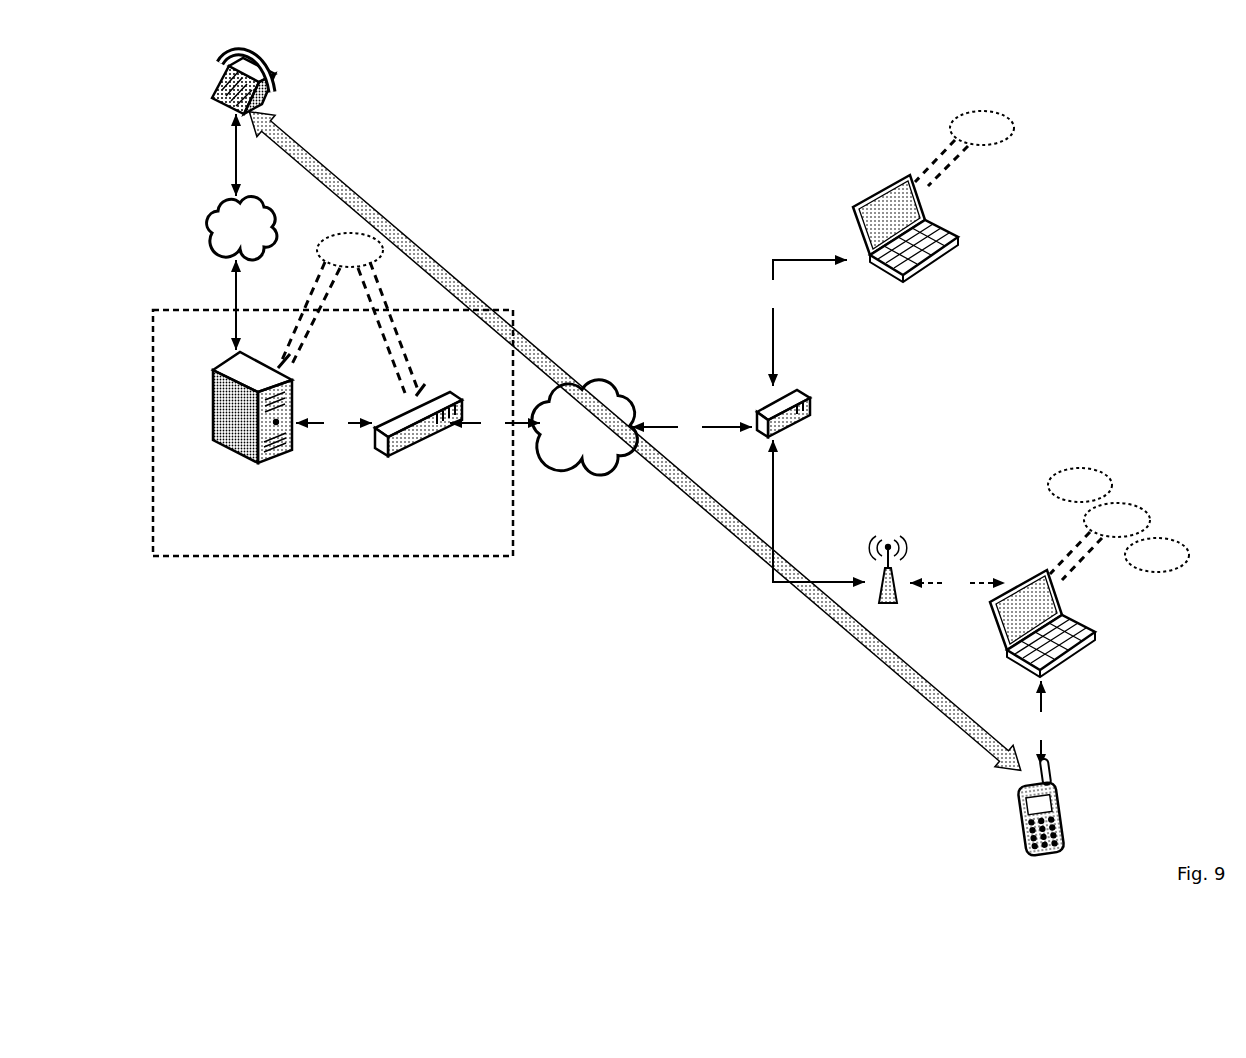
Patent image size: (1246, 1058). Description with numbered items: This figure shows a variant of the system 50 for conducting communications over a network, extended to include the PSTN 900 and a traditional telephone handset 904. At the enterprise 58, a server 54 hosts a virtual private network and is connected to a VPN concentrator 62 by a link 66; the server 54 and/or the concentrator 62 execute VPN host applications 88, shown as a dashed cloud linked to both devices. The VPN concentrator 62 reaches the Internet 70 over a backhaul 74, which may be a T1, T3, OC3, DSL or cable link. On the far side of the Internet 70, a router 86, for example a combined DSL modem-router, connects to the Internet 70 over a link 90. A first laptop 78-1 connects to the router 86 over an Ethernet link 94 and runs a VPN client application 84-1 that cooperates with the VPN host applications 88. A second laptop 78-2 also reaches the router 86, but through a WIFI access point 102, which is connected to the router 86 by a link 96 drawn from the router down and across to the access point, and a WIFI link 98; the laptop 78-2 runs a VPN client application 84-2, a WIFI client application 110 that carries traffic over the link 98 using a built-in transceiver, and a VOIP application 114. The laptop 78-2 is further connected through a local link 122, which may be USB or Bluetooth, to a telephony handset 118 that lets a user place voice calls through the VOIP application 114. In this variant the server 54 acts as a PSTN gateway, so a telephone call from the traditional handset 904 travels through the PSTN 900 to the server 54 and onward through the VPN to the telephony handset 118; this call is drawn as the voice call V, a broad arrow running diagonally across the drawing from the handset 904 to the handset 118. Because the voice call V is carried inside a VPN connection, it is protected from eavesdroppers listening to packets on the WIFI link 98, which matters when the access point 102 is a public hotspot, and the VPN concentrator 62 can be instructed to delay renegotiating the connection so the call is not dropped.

The system 50 is at (268, 770).
The server 54 is at (230, 443).
The enterprise 58 is at (193, 560).
The VPN concentrator 62 is at (383, 447).
The link 66 is at (325, 433).
The Internet 70 is at (574, 436).
The backhaul 74 is at (482, 433).
The first laptop 78-1 is at (956, 259).
The second laptop 78-2 is at (1100, 645).
The VPN client application 84-1 is at (963, 137).
The VPN client application 84-2 is at (1098, 529).
The router 86 is at (815, 388).
The VPN host application 88 is at (339, 259).
The link 90 is at (679, 436).
The link 94 is at (760, 300).
The link between router and access point 96 is at (764, 563).
The WIFI link 98 is at (947, 592).
The WIFI access point 102 is at (900, 568).
The WIFI client application 110 is at (1064, 494).
The VOIP application 114 is at (1141, 564).
The telephony handset 118 is at (1068, 797).
The local link 122 is at (1025, 732).
The PSTN 900 is at (226, 237).
The traditional telephone handset 904 is at (210, 102).
The voice call V is at (700, 505).